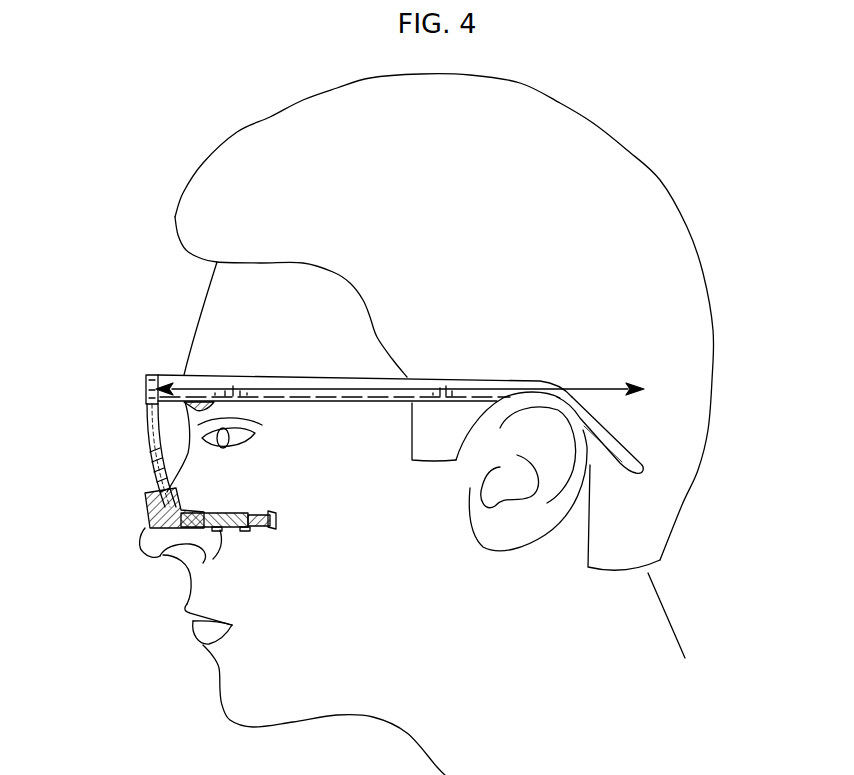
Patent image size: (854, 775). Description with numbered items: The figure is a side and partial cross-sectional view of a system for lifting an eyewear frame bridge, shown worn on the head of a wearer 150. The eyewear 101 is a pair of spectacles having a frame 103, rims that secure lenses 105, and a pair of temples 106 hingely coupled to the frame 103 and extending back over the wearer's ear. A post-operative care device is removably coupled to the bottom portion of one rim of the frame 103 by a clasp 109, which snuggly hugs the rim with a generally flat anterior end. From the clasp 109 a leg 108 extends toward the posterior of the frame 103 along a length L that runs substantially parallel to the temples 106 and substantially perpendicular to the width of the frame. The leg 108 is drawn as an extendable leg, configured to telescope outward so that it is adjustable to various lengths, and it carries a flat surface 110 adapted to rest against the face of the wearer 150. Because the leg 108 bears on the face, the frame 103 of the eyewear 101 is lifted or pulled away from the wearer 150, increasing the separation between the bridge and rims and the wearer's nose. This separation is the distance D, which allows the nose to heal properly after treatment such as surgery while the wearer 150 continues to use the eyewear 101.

The eyewear 101 is at (133, 363).
The frame 103 is at (157, 374).
The lenses 105 is at (152, 410).
The temples 106 is at (327, 377).
The leg 108 is at (237, 513).
The clasp 109 is at (147, 500).
The flat surface 110 is at (268, 523).
The wearer 150 is at (200, 318).
The distance D is at (172, 452).
The length L is at (625, 389).